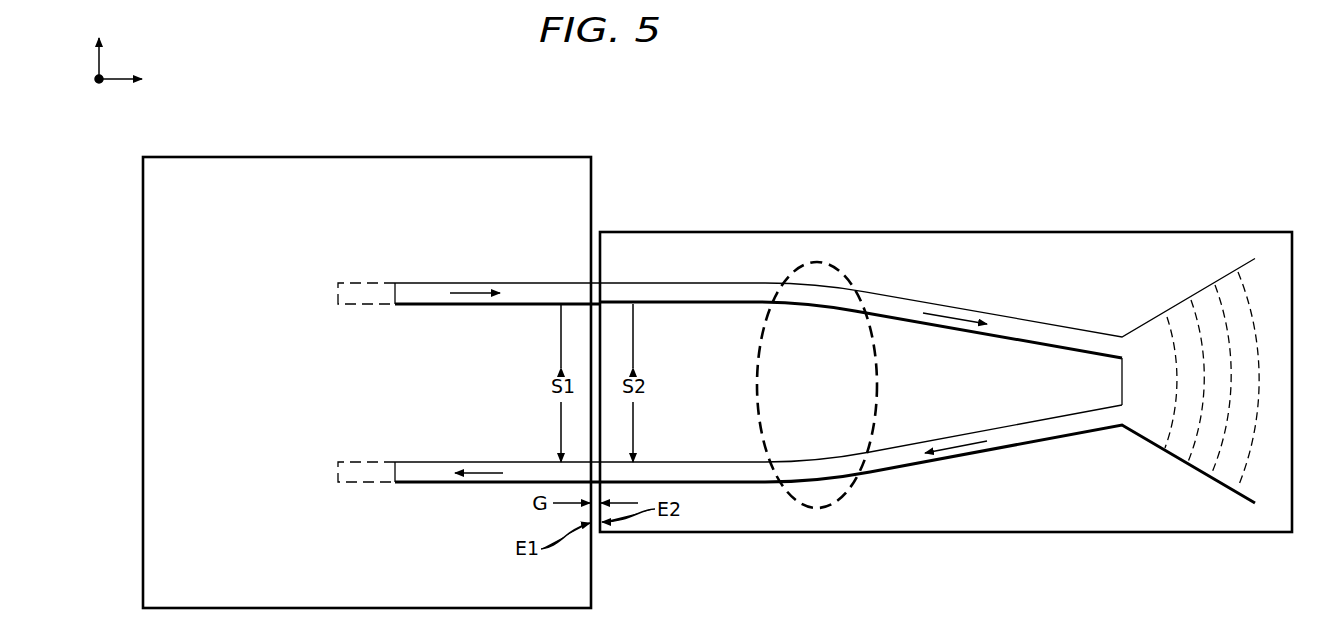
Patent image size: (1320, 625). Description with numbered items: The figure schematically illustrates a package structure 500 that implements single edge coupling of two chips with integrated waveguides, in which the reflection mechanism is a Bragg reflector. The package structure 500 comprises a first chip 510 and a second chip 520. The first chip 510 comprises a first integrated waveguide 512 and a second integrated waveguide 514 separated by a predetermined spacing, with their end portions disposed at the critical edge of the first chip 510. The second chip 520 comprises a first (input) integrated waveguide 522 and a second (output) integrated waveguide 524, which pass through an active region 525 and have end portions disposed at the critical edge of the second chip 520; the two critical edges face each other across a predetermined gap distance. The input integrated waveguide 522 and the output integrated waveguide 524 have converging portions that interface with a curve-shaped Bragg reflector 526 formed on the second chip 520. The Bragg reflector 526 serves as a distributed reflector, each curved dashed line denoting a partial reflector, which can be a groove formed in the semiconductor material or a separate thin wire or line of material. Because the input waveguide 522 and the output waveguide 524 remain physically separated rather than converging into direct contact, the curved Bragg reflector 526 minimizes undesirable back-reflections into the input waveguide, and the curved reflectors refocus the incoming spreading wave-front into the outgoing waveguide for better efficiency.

The package structure 500 is at (582, 78).
The first chip 510 is at (463, 157).
The first integrated waveguide 512 is at (467, 280).
The second integrated waveguide 514 is at (467, 459).
The second chip 520 is at (1223, 232).
The first (input) integrated waveguide 522 is at (647, 283).
The second (output) integrated waveguide 524 is at (683, 483).
The active region 525 is at (851, 282).
The curve-shaped Bragg reflector 526 is at (1140, 322).